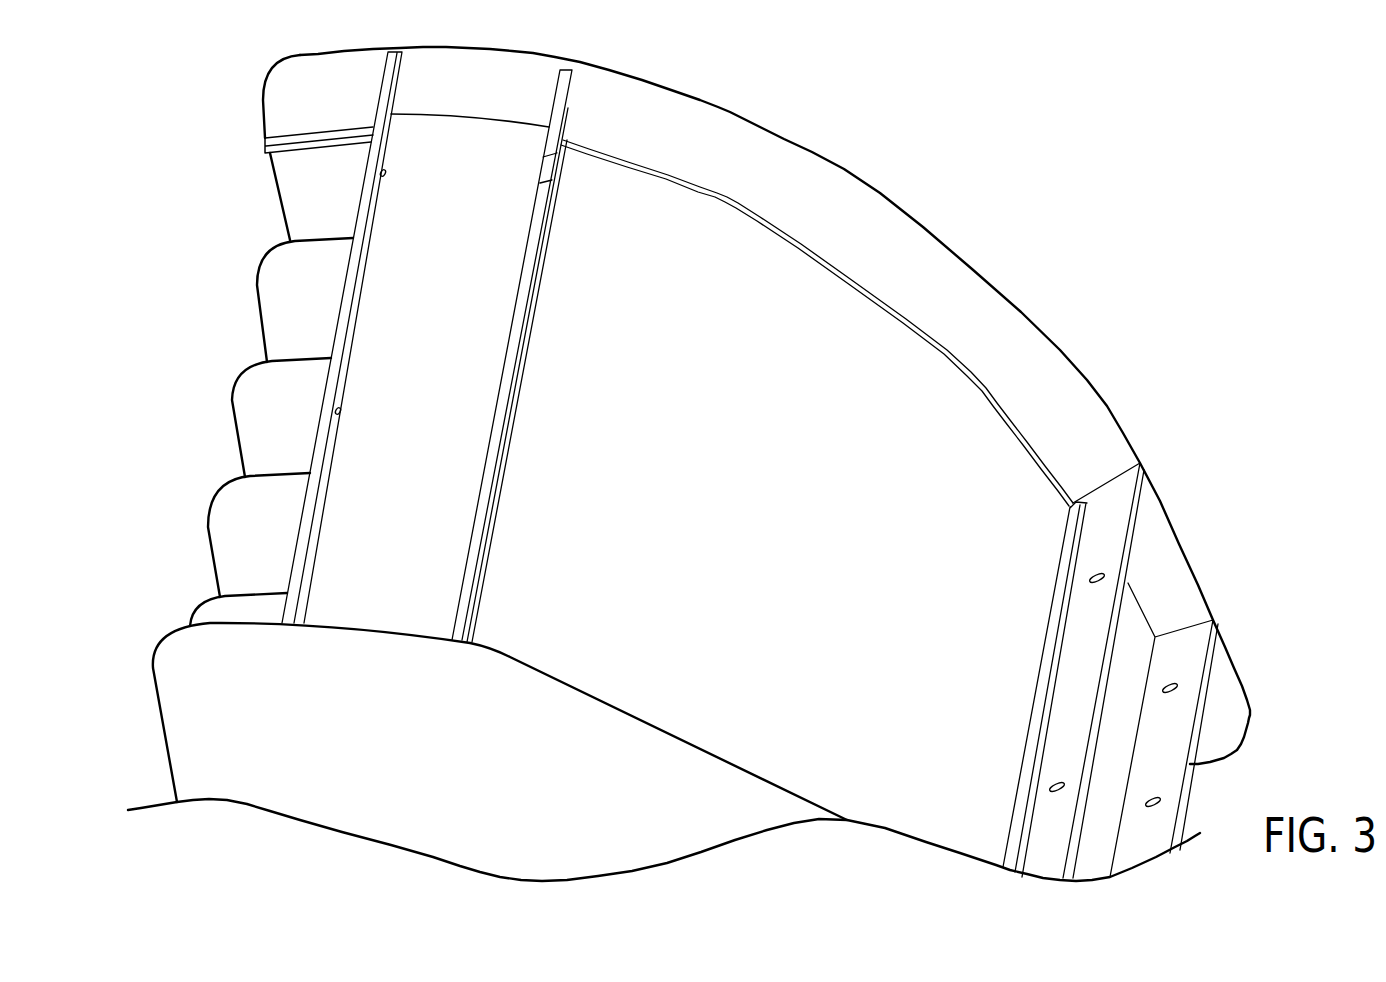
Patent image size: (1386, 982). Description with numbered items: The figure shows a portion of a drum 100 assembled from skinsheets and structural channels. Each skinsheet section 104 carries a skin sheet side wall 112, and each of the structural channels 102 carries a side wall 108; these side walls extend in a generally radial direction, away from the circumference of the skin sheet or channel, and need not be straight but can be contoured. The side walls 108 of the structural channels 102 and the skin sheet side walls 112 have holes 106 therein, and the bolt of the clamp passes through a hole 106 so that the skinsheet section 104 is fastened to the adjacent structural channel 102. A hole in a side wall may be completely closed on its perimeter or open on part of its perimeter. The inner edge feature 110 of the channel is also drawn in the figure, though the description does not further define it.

The drum 100 is at (730, 661).
The structural channels 102 is at (443, 464).
The skinsheet section 104 is at (851, 308).
The holes 106 is at (388, 173).
The side wall 108 is at (537, 203).
The inner flange edge 110 is at (609, 190).
The skin sheet side wall 112 is at (541, 266).